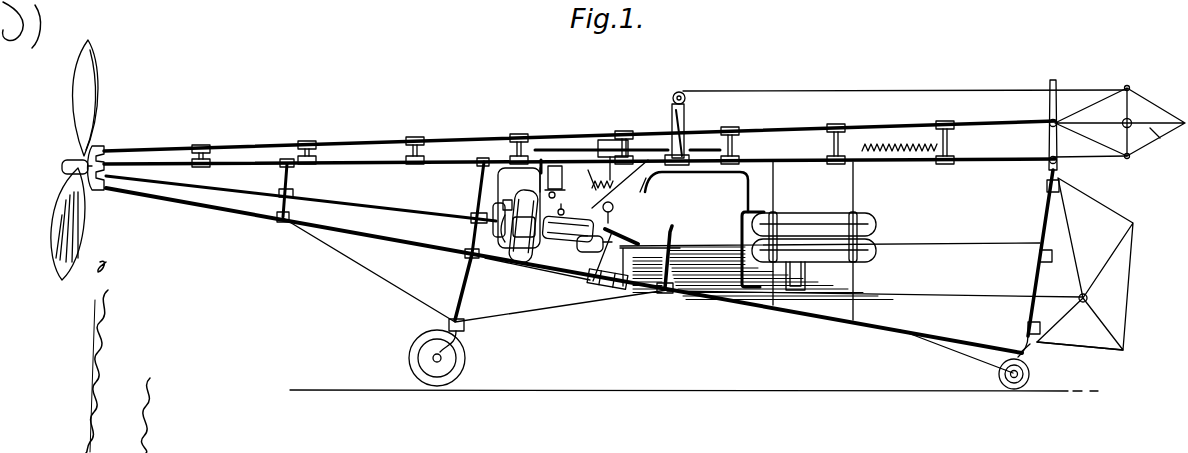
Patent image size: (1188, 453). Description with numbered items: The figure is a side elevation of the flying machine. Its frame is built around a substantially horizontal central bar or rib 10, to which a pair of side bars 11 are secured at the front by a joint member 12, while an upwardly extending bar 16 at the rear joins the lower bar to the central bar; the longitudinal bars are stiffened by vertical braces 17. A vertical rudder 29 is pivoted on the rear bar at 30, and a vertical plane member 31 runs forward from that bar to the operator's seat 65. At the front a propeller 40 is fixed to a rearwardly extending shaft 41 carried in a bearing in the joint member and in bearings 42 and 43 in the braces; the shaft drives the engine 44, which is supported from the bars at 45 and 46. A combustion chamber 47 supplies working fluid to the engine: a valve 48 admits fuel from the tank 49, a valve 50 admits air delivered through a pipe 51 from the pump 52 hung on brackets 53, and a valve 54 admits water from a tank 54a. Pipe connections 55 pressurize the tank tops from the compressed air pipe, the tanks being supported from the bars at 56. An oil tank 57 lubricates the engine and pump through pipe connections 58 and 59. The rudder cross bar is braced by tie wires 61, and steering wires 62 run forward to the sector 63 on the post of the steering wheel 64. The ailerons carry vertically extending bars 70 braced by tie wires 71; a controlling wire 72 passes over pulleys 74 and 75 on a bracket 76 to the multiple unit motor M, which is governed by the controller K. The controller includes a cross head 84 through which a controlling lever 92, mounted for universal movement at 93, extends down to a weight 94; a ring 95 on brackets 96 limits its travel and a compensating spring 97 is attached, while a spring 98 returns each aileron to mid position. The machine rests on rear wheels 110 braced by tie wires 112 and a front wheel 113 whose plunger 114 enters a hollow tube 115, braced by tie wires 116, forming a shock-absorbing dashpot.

The central bar or rib 10 is at (440, 158).
The side bars 11 is at (360, 141).
The joint member 12 is at (101, 145).
The upwardly extending bar 16 is at (1049, 206).
The braces 17 is at (294, 181).
The vertical rudder 29 is at (1108, 346).
The rudder pivot 30 is at (1046, 187).
The vertical plane member 31 is at (992, 243).
The propeller 40 is at (96, 72).
The shaft 41 is at (213, 172).
The bearing 42 is at (262, 189).
The bearing 43 is at (471, 220).
The engine 44 is at (520, 257).
The engine support 45 is at (543, 161).
The engine support 46 is at (523, 258).
The combustion chamber 47 is at (562, 234).
The valve 48 is at (590, 271).
The tank 49 is at (838, 258).
The valve 50 is at (612, 232).
The pipe 51 is at (573, 258).
The pump 52 is at (497, 240).
The brackets 53 is at (523, 180).
The valve 54 is at (579, 243).
The water tank 54a is at (877, 225).
The pipe connections 55 is at (741, 218).
The tank supports 56 is at (776, 178).
The oil tank 57 is at (566, 185).
The pipe connection 58 is at (573, 206).
The pipe connection 59 is at (497, 178).
The tie wires 61 is at (1116, 240).
The steering wires 62 is at (992, 298).
The sector 63 is at (588, 290).
The steering wheel 64 is at (628, 240).
The operator's seat 65 is at (663, 252).
The vertically extending bars 70 is at (1129, 104).
The tie wires 71 is at (1166, 144).
The controlling wire 72 is at (995, 92).
The pulley 74 is at (681, 92).
The pulley 75 is at (184, 195).
The bracket 76 is at (685, 114).
The cross head 84 is at (702, 173).
The controlling lever 92 is at (626, 198).
The universal mounting 93 is at (601, 158).
The weight 94 is at (614, 205).
The ring 95 is at (601, 152).
The brackets 96 is at (647, 190).
The compensating spring 97 is at (588, 170).
The spring 98 is at (905, 137).
The rear wheels 110 is at (1010, 379).
The tie wires 112 is at (976, 355).
The front wheel 113 is at (466, 358).
The plunger 114 is at (464, 326).
The hollow tube 115 is at (467, 275).
The tie wires 116 is at (420, 302).
The controller K is at (604, 170).
The multiple unit motor M is at (669, 110).